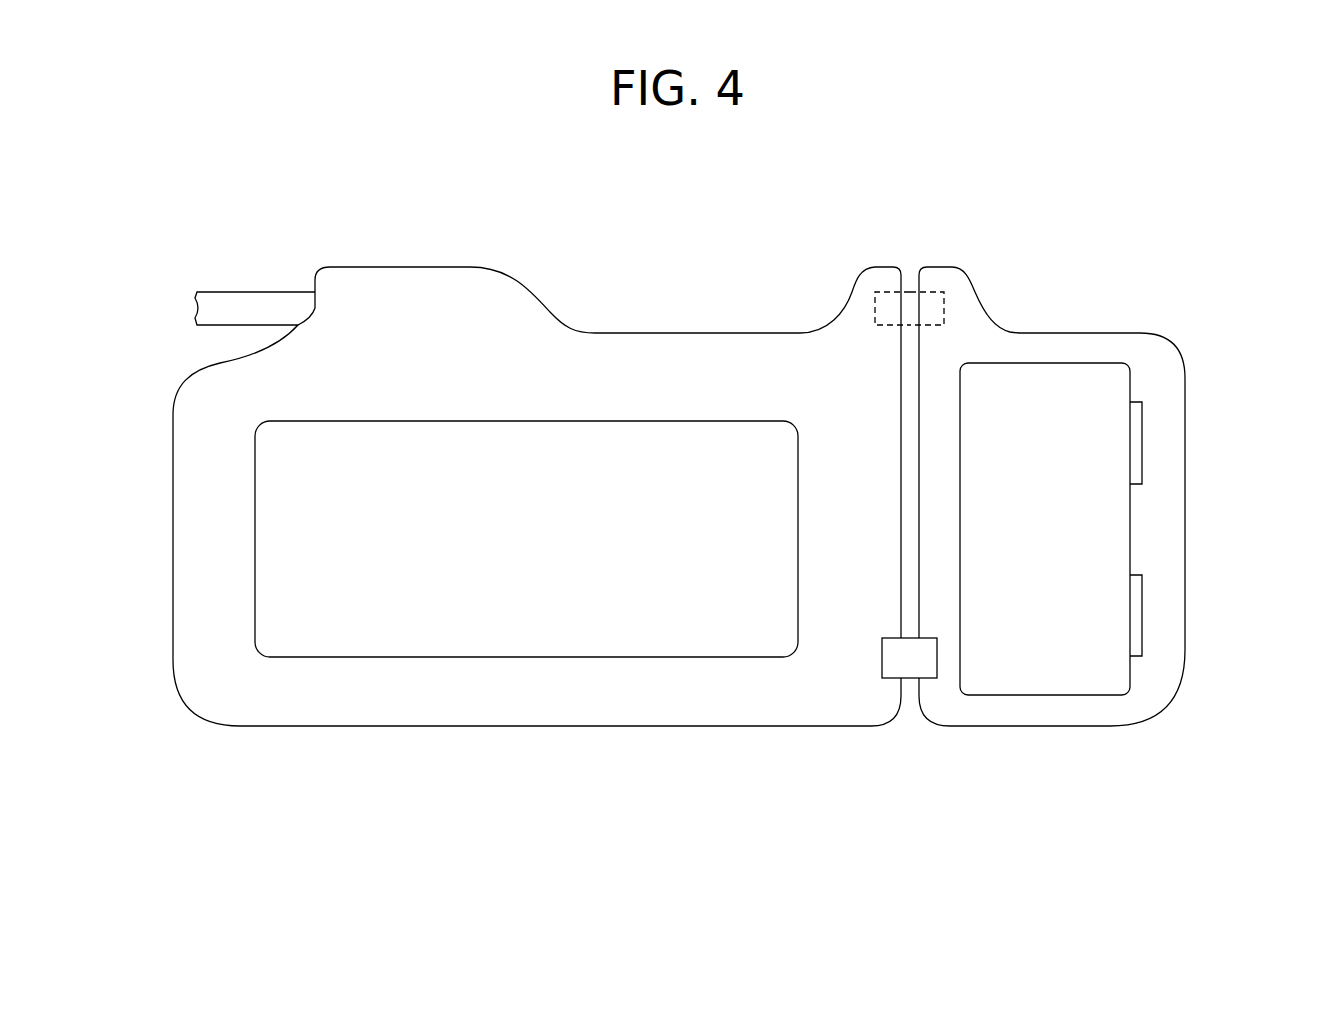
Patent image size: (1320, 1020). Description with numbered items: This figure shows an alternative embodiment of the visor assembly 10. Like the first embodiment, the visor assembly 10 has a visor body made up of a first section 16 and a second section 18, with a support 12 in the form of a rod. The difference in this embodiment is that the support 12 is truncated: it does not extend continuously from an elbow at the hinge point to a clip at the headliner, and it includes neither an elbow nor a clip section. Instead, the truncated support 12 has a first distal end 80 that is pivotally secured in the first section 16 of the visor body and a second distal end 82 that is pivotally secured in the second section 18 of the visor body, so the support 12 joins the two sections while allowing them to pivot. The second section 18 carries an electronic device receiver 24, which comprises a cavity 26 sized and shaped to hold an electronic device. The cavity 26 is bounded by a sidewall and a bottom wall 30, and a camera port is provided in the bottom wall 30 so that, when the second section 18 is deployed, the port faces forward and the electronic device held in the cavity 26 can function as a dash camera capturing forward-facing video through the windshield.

The visor assembly 10 is at (932, 200).
The support 12 is at (908, 290).
The first section 16 is at (327, 703).
The second section 18 is at (1050, 718).
The electronic device receiver 24 is at (1158, 393).
The cavity 26 is at (1080, 363).
The bottom wall 30 is at (1088, 533).
The first distal end 80 is at (872, 306).
The second distal end 82 is at (945, 307).